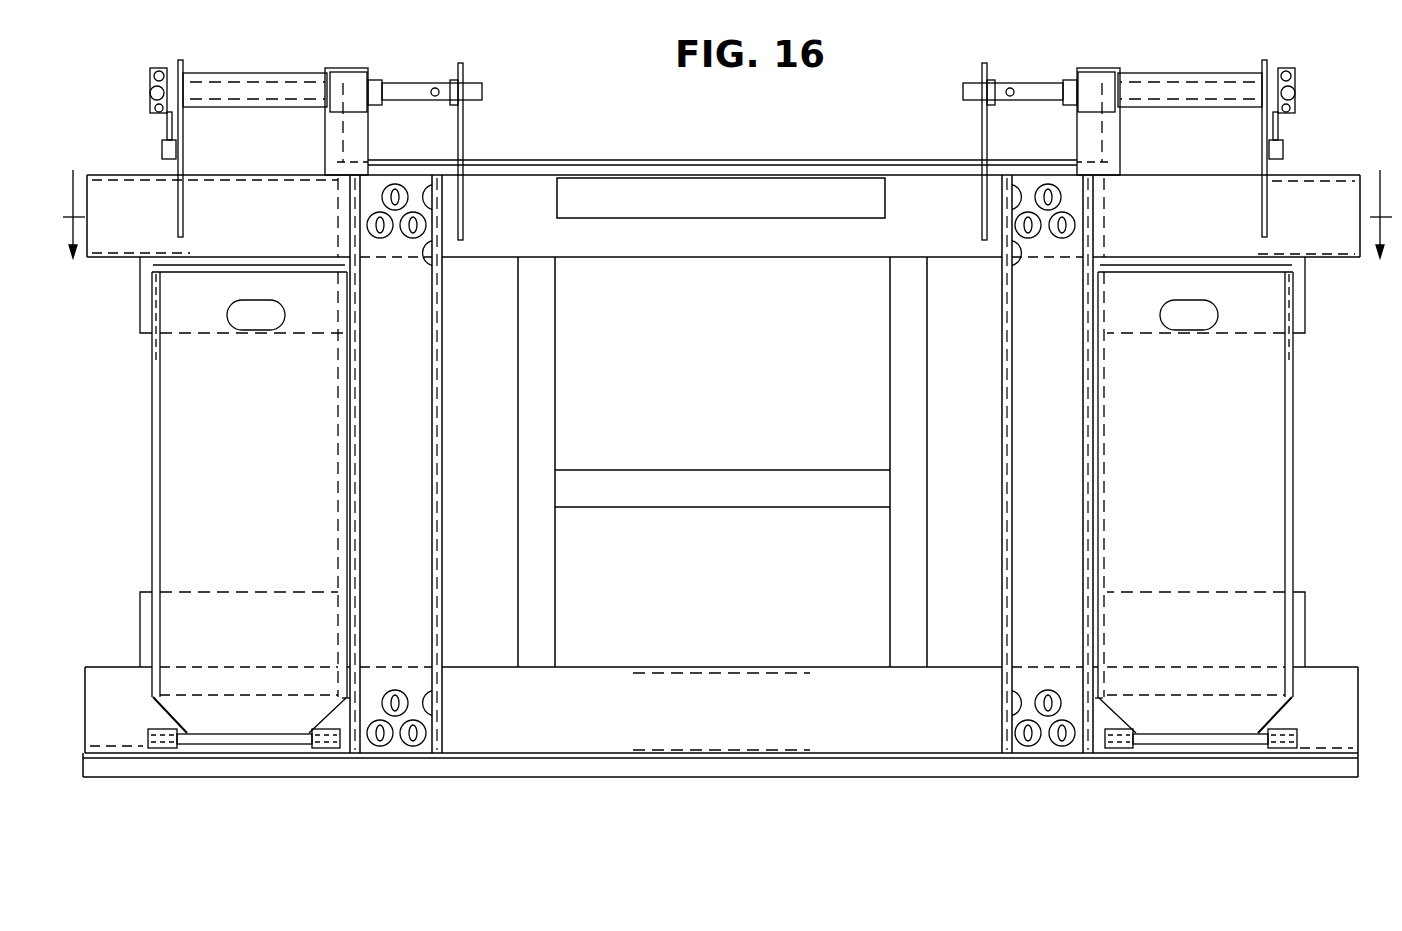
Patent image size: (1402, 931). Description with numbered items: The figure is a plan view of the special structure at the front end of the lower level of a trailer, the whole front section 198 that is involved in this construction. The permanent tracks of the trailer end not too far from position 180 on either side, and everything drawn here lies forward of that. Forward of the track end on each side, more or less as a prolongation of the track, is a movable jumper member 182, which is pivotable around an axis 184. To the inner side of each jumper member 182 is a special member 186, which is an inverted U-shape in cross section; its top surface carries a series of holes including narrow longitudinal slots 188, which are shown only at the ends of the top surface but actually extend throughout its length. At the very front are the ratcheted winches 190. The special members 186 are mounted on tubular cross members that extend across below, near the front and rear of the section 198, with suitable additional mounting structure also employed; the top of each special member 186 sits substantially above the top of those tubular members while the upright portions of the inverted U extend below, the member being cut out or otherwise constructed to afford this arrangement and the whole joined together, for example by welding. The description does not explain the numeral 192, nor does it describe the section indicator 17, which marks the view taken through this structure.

The position 180 is at (1362, 760).
The movable jumper member 182 is at (160, 707).
The axis 184 is at (147, 737).
The special member 186 is at (398, 760).
The narrow longitudinal slots 188 is at (1070, 228).
The rachetted winches 190 is at (405, 85).
The right hydraulic cylinder 192 is at (1223, 77).
The section 198 is at (1305, 294).
The section line 17- 17 is at (729, 229).